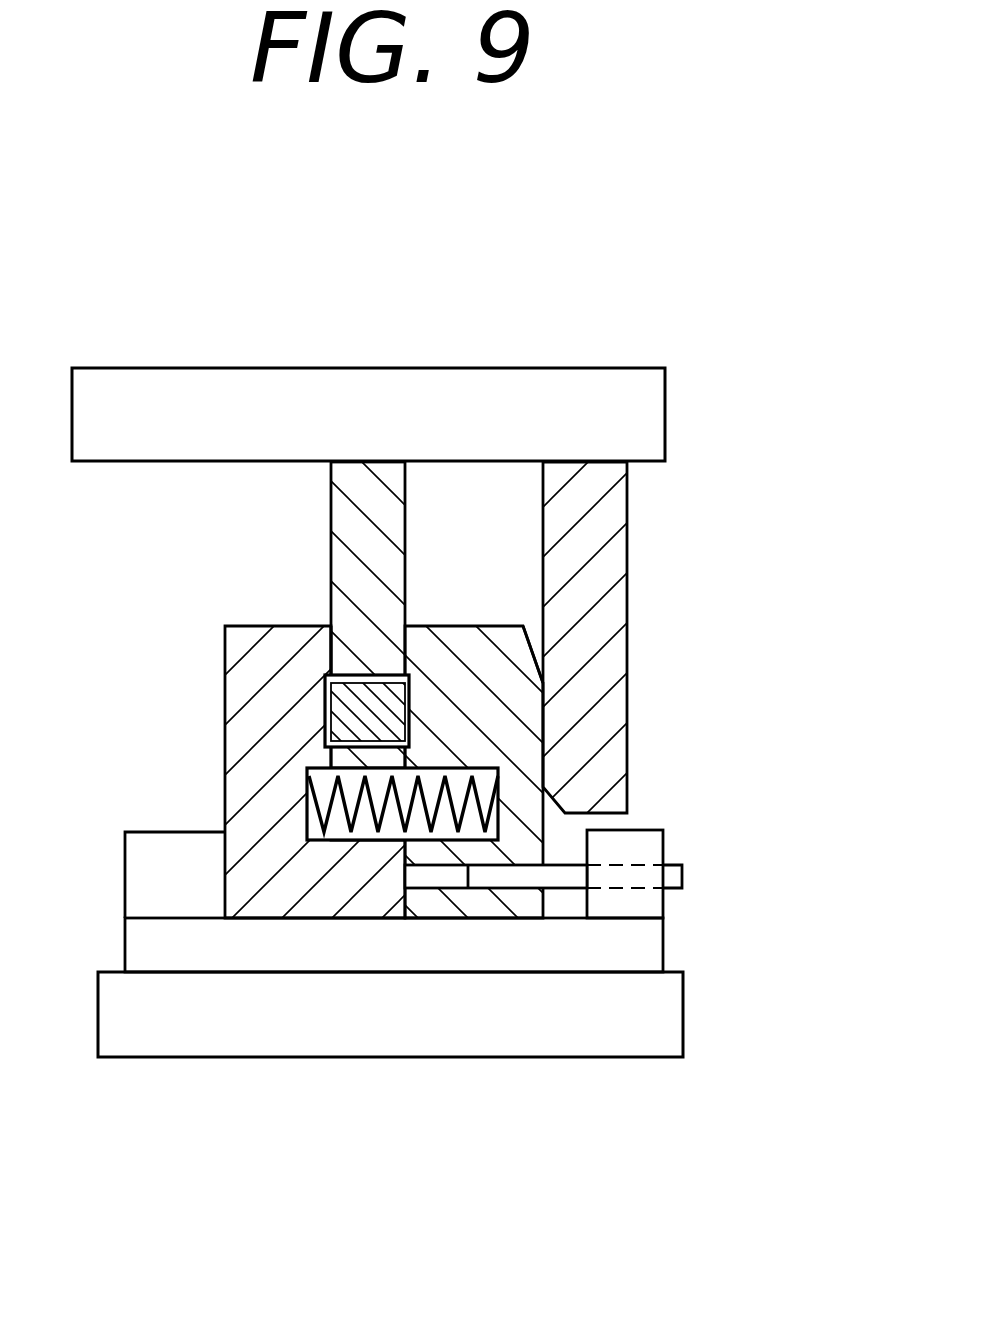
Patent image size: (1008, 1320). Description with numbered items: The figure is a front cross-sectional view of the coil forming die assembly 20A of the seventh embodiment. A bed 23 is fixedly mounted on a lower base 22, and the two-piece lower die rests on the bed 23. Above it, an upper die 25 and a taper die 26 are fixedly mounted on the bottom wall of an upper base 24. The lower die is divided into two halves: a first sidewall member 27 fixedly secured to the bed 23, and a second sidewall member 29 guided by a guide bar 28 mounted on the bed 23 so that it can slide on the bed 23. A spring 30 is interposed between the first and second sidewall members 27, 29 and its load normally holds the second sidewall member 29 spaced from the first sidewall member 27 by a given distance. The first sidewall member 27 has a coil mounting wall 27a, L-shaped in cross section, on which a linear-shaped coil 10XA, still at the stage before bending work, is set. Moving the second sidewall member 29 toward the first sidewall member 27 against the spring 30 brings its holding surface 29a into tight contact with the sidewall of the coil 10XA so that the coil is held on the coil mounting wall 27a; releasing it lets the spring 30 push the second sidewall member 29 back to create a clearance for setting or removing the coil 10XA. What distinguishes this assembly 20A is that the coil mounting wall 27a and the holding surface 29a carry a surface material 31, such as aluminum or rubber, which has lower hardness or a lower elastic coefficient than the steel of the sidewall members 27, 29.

The linear-shaped coil 10XA is at (398, 703).
The coil forming die assembly 20A is at (604, 357).
The lower base 22 is at (188, 1037).
The bed 23 is at (632, 950).
The upper base 24 is at (163, 395).
The upper die 25 is at (372, 490).
The taper die 26 is at (628, 583).
The first sidewall member 27 is at (263, 767).
The coil mounting wall 27a is at (327, 660).
The guide bar 28 is at (508, 885).
The second sidewall member 29 is at (517, 731).
The holding surface 29a is at (392, 682).
The spring 30 is at (400, 835).
The surface material 31 is at (325, 717).